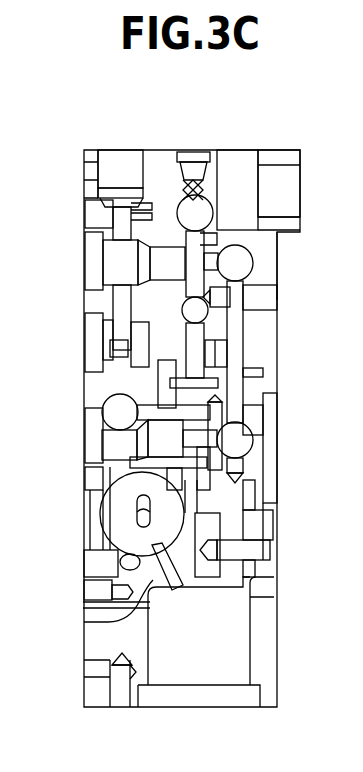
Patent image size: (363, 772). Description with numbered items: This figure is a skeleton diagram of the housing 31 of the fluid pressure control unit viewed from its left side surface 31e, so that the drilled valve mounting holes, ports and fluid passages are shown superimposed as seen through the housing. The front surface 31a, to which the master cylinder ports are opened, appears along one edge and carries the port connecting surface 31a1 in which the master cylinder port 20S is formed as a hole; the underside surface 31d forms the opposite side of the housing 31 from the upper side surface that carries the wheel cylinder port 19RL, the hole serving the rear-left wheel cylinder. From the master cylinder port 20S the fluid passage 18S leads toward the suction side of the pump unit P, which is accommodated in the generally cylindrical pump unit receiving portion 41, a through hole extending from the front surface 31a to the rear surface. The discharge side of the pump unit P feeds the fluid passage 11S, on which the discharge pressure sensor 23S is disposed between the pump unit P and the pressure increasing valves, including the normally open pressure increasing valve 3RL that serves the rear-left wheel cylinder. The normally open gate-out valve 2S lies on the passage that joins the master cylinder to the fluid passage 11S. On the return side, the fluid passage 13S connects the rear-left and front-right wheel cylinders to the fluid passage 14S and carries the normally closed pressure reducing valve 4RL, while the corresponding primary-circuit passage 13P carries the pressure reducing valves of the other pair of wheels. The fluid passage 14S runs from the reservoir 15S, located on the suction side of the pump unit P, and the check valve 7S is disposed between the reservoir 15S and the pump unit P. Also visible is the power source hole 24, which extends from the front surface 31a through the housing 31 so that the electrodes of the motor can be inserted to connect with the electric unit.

The wheel cylinder port 19RL is at (125, 150).
The housing 31 is at (288, 137).
The master cylinder port 20S is at (293, 180).
The port connecting surface 31a1 is at (338, 205).
The pressure increasing valve 3RL is at (97, 213).
The pressure reducing valve 4RL is at (97, 262).
The fluid passage 18S is at (228, 237).
The front surface 31a is at (277, 270).
The fluid passage 11S is at (235, 317).
The fluid passage 13P is at (217, 353).
The fluid passage 13S is at (195, 384).
The pump unit P is at (290, 443).
The power source hole 24 is at (97, 343).
The gate-out valve 2S is at (97, 436).
The check valve 7S is at (245, 527).
The pump unit receiving portion 41 is at (270, 590).
The discharge pressure sensor 23S is at (95, 563).
The left side surface 31e is at (263, 648).
The fluid passage 14S is at (84, 622).
The underside surface 31d is at (95, 706).
The reservoir 15S is at (217, 693).